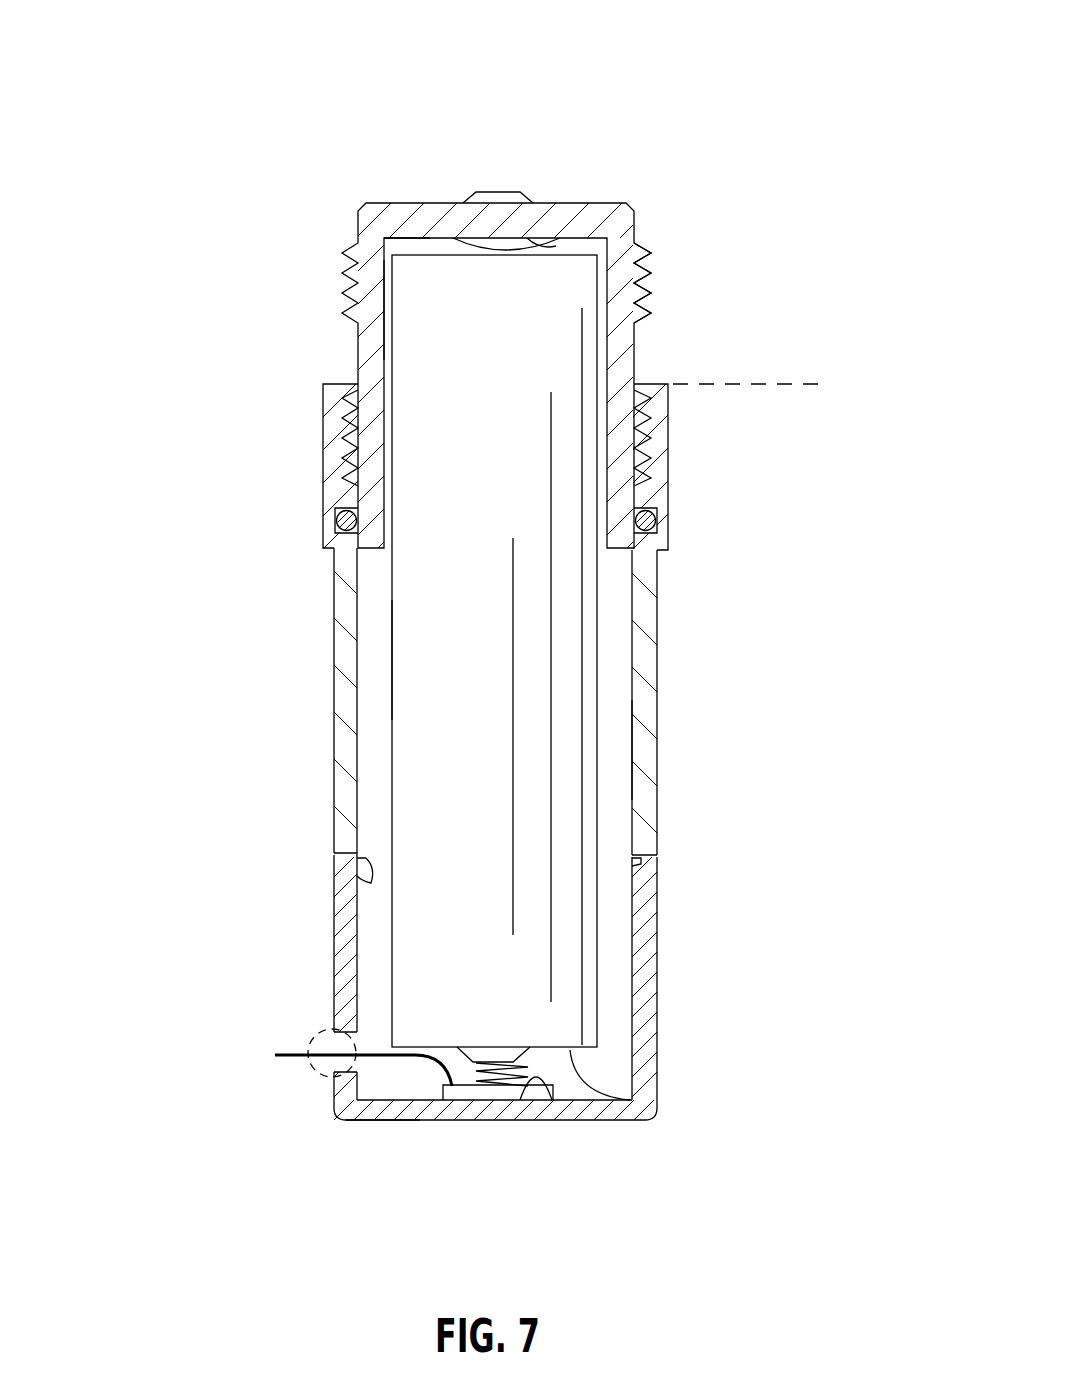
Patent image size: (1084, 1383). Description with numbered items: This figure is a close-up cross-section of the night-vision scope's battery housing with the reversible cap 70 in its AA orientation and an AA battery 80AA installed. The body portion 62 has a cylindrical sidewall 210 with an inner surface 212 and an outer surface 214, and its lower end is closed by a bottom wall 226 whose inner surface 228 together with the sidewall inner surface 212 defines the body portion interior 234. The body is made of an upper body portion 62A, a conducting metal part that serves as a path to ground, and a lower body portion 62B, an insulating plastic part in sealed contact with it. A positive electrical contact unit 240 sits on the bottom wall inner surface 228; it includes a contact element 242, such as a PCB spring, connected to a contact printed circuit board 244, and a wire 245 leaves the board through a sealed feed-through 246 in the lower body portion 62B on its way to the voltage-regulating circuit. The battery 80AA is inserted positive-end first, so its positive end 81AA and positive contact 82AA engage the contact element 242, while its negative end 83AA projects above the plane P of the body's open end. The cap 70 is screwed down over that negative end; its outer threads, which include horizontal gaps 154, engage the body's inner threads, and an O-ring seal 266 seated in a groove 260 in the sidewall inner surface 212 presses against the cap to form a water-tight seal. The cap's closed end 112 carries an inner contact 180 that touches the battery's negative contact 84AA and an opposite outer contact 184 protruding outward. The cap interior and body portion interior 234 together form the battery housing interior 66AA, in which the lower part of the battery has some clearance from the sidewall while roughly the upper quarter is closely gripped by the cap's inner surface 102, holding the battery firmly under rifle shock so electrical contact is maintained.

The reversible cap 70 is at (290, 258).
The closed end 112 is at (507, 165).
The outer contact 184 is at (493, 194).
The inner contact 180 is at (567, 242).
The negative contact 84AA is at (556, 250).
The negative end 83AA is at (415, 237).
The inner surface 102 is at (405, 358).
The horizontal gaps 154 is at (680, 345).
The plane P is at (772, 383).
The body portion 62 is at (696, 603).
The upper body portion 62A is at (722, 498).
The groove 260 is at (345, 505).
The O-ring seal 266 is at (340, 522).
The cylindrical sidewall 210 is at (337, 603).
The outer surface 214 is at (333, 783).
The battery housing interior 66AA is at (370, 672).
The body portion interior 234 is at (613, 755).
The lower body portion 62B is at (758, 988).
The inner surface 212 is at (333, 870).
The bottom wall 226 is at (582, 1112).
The contact printed circuit board 244 is at (367, 1113).
The sealed feed-through 246 is at (295, 1020).
The wire 245 is at (292, 1057).
The positive electrical contact unit 240 is at (462, 1100).
The contact element 242 is at (500, 1110).
The inner surface 228 is at (537, 1081).
The AA battery 80AA is at (540, 497).
The positive contact 82AA is at (463, 1053).
The positive end 81AA is at (652, 1108).